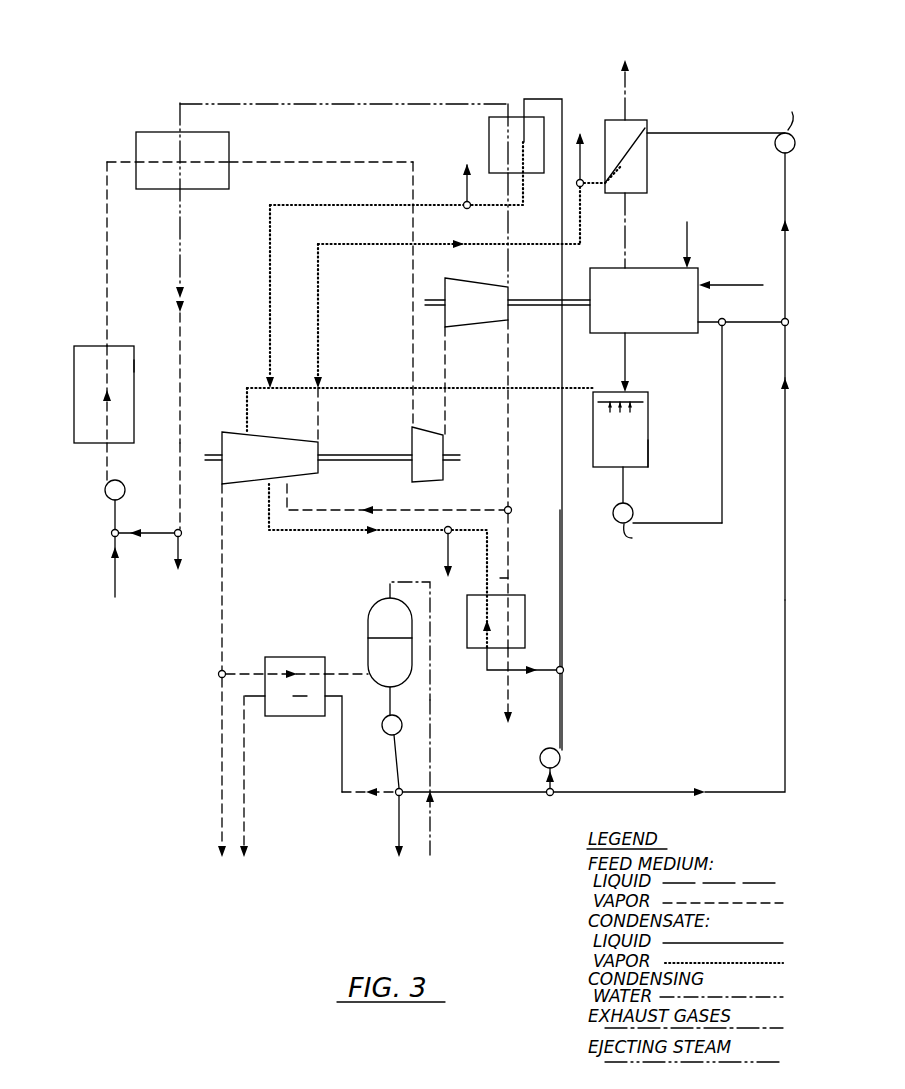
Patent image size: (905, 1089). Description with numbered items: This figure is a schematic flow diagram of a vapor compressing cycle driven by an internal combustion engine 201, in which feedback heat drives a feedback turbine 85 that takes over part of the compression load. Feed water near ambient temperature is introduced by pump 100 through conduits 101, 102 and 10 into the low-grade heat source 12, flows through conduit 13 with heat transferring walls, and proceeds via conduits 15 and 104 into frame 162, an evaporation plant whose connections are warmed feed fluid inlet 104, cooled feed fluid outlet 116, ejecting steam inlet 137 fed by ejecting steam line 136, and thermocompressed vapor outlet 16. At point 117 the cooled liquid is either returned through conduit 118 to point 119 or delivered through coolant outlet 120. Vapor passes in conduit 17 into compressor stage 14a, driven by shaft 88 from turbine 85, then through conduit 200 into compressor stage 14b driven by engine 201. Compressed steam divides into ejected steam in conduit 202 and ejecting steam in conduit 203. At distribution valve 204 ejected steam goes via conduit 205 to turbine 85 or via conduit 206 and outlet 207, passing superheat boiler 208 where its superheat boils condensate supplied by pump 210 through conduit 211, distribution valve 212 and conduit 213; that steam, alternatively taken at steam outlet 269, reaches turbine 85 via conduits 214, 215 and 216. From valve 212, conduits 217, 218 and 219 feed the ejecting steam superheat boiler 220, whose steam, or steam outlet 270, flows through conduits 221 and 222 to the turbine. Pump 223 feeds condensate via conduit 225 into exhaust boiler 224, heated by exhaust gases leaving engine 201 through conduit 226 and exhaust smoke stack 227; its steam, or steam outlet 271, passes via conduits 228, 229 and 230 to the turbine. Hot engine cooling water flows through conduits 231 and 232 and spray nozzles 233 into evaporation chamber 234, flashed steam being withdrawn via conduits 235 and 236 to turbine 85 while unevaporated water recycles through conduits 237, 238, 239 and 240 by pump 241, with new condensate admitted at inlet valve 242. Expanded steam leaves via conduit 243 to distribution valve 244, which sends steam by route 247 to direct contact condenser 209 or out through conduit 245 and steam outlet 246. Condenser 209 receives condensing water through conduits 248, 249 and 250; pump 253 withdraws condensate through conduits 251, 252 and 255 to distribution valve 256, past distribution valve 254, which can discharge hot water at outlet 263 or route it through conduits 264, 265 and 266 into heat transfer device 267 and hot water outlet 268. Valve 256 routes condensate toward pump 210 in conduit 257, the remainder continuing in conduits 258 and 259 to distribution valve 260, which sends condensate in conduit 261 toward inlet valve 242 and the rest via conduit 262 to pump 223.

The conduit 10 is at (106, 470).
The low-grade heat source 12 is at (135, 362).
The conduit 13 is at (106, 365).
The compressor stage 14a is at (445, 472).
The compressor stage 14b is at (498, 284).
The conduit 15 is at (106, 243).
The thermocompressed vapor outlet 16 is at (286, 162).
The conduit 17 is at (412, 276).
The feedback turbine 85 is at (230, 488).
The shaft 88 is at (378, 452).
The pump 100 is at (134, 482).
The conduit 101 is at (115, 570).
The conduit 102 is at (112, 518).
The warmed feed fluid inlet 104 is at (122, 162).
The cooled feed fluid outlet 116 is at (182, 413).
The point 117 is at (181, 528).
The conduit 118 is at (150, 538).
The point 119 is at (112, 538).
The coolant outlet 120 is at (183, 552).
The ejecting steam line 136 is at (299, 103).
The ejecting steam inlet 137 is at (185, 108).
The frame 162 is at (160, 132).
The conduit 200 is at (447, 400).
The internal combustion engine 201 is at (626, 334).
The conduit 202 is at (506, 366).
The conduit 203 is at (506, 226).
The distribution valve 204 is at (510, 513).
The conduit 205 is at (339, 510).
The conduit 206 is at (509, 556).
The outlet 207 is at (508, 683).
The superheat boiler 208 is at (527, 620).
The direct contact condenser 209 is at (372, 612).
The pump 210 is at (561, 768).
The conduit 211 is at (563, 727).
The distribution valve 212 is at (562, 674).
The conduit 213 is at (498, 672).
The conduit 214 is at (487, 578).
The conduit 215 is at (300, 531).
The conduit 216 is at (268, 518).
The conduit 217 is at (566, 572).
The conduit 218 is at (557, 98).
The conduit 219 is at (522, 108).
The ejecting steam superheat boiler 220 is at (488, 147).
The conduit 221 is at (388, 205).
The conduit 222 is at (268, 304).
The pump 223 is at (782, 153).
The exhaust boiler 224 is at (648, 186).
The conduit 225 is at (714, 126).
The conduit 226 is at (628, 206).
The exhaust smoke stack 227 is at (633, 84).
The conduit 228 is at (581, 204).
The conduit 229 is at (330, 243).
The conduit 230 is at (322, 302).
The conduit 231 is at (658, 380).
The conduit 232 is at (650, 403).
The spray nozzles 233 is at (630, 410).
The evaporation chamber 234 is at (649, 452).
The conduit 235 is at (339, 399).
The conduit 236 is at (243, 394).
The conduit 237 is at (623, 488).
The conduit 238 is at (722, 524).
The conduit 239 is at (723, 470).
The conduit 240 is at (710, 325).
The pump 241 is at (636, 503).
The inlet valve 242 is at (725, 319).
The conduit 243 is at (236, 603).
The distribution valve 244 is at (219, 680).
The conduit 245 is at (218, 803).
The steam outlet 246 is at (218, 827).
The route 247 is at (242, 680).
The conduit 248 is at (431, 725).
The conduit 249 is at (430, 612).
The conduit 250 is at (461, 565).
The conduit 251 is at (390, 706).
The conduit 252 is at (397, 786).
The pump 253 is at (396, 738).
The distribution valve 254 is at (397, 800).
The conduit 255 is at (540, 793).
The distribution valve 256 is at (556, 797).
The conduit 257 is at (572, 786).
The conduit 258 is at (733, 792).
The conduit 259 is at (784, 443).
The distribution valve 260 is at (782, 326).
The conduit 261 is at (735, 325).
The conduit 262 is at (783, 218).
The outlet 263 is at (396, 843).
The conduit 264 is at (344, 794).
The conduit 265 is at (340, 766).
The conduit 266 is at (326, 686).
The heat transfer device 267 is at (300, 718).
The hot water outlet 268 is at (247, 824).
The steam outlet 269 is at (445, 555).
The steam outlet 270 is at (462, 186).
The steam outlet 271 is at (588, 153).